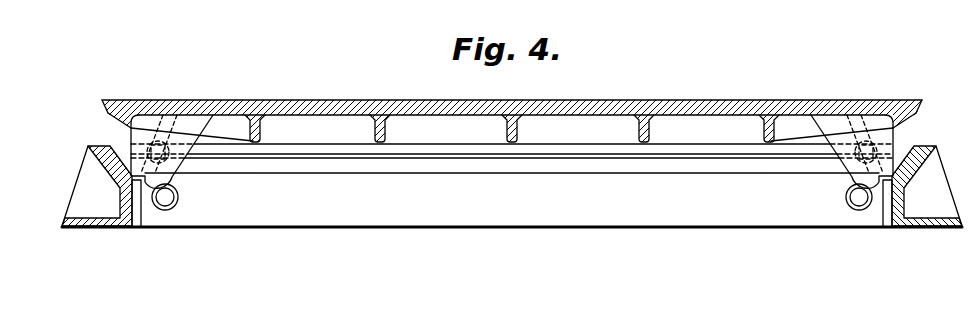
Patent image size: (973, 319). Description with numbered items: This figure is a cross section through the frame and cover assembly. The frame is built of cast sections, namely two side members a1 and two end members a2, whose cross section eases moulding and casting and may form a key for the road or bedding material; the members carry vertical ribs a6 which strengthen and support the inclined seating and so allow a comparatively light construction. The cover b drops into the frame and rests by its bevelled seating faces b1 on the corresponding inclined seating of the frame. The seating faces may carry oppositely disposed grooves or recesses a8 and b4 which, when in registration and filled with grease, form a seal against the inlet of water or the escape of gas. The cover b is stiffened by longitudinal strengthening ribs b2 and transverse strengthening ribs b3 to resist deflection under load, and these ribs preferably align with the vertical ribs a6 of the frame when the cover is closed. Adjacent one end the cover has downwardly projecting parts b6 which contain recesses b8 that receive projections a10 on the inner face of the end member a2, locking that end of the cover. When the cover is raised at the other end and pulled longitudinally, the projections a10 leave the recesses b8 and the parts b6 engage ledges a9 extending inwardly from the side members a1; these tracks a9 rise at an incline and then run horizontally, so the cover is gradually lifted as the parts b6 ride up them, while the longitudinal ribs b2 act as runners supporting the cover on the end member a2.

The cover b is at (583, 106).
The inclined seating faces b1 is at (118, 124).
The longitudinal strengthening ribs b2 is at (315, 123).
The transverse strengthening ribs b3 is at (383, 140).
The grooves or recesses b4 is at (116, 100).
The downwardly projecting parts b6 is at (180, 178).
The recesses b8 is at (158, 125).
The side members a1 is at (112, 222).
The end members a2 is at (512, 175).
The vertical ribs a6 is at (88, 184).
The grooves or recesses a8 is at (597, 158).
The ledges forming tracks a9 is at (137, 228).
The projections a10 is at (168, 200).